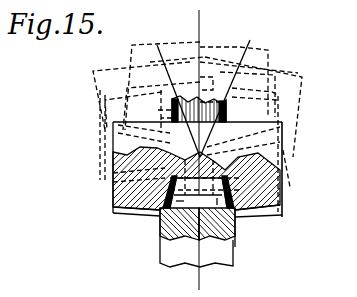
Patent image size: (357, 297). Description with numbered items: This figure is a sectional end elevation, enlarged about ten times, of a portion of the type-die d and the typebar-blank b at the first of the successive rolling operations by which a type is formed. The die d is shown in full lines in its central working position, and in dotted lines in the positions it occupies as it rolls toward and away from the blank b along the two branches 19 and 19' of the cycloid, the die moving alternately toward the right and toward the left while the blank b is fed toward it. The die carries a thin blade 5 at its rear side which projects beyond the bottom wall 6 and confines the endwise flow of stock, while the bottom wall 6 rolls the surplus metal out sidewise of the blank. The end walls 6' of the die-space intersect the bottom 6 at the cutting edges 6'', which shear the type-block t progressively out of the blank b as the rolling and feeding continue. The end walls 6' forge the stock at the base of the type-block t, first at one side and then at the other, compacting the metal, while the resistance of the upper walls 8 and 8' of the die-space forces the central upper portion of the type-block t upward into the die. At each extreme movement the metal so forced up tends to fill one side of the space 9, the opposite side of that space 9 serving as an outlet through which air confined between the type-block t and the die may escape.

The branch of the cycloid 19 is at (150, 86).
The branch of the cycloid 19' is at (251, 129).
The type-die d is at (113, 110).
The end walls of the die-space 6' is at (199, 177).
The space 9 is at (113, 198).
The blade 5 is at (113, 213).
The cutting edges 6'' is at (194, 212).
The type-block t is at (160, 238).
The upper wall of the die-space 8 is at (179, 234).
The upper wall of the die-space 8' is at (217, 235).
The blank b is at (234, 259).
The bottom wall of the die 6 is at (265, 228).